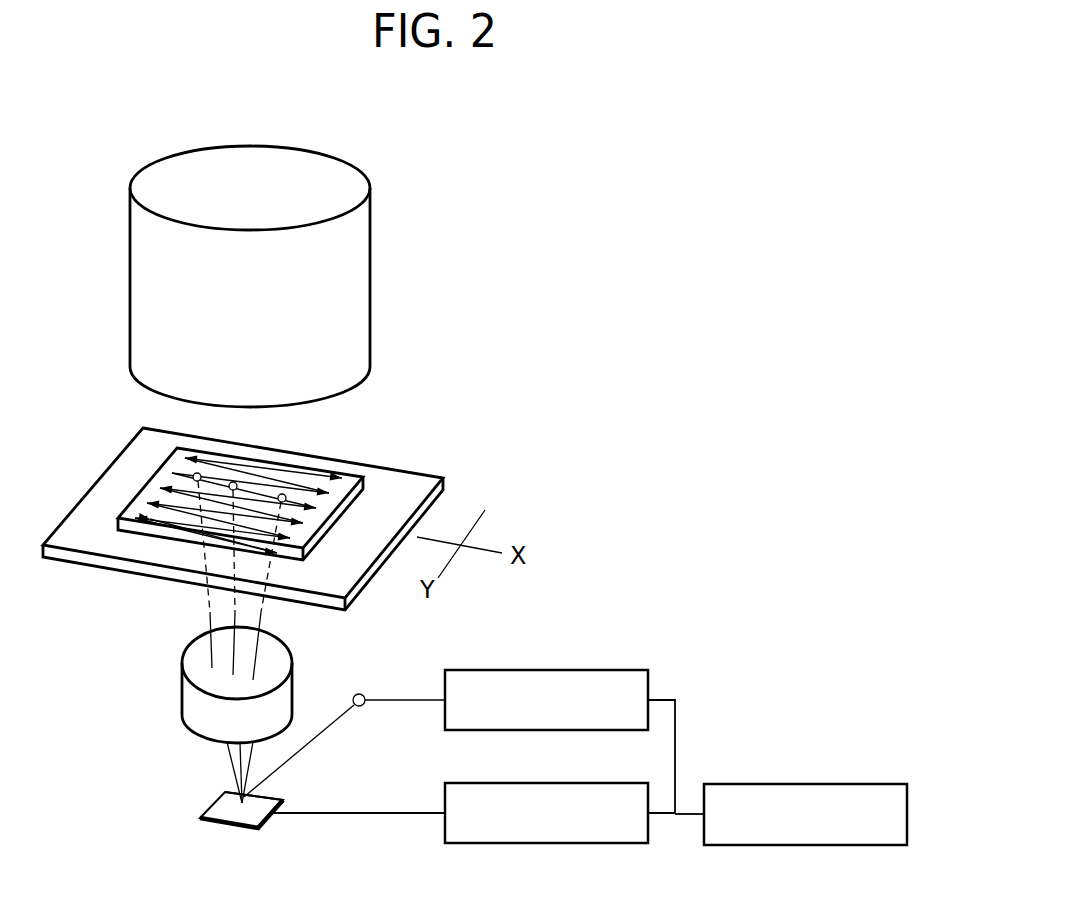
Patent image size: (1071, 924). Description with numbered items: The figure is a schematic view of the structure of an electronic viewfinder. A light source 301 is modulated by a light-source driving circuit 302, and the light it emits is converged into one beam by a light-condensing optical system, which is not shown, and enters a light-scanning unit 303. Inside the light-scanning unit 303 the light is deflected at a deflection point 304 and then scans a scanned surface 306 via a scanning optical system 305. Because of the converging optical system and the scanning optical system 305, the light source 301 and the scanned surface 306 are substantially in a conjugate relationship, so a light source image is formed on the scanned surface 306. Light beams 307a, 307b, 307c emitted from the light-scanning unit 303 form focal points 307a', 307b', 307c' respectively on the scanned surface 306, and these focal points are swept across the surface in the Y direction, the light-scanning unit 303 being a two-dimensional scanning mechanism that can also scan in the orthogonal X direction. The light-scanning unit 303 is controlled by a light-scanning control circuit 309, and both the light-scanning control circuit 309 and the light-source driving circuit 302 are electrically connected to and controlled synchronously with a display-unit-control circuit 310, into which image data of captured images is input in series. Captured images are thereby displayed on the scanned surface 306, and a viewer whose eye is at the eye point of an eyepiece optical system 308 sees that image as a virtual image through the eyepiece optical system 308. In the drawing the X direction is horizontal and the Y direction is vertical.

The light source 301 is at (359, 693).
The light-source driving circuit 302 is at (563, 670).
The light-scanning unit 303 is at (268, 830).
The deflection point 304 is at (240, 830).
The scanning optical system 305 is at (182, 700).
The scanned surface 306 is at (90, 488).
The light beam 307a is at (149, 769).
The light beam 307b is at (149, 773).
The light beam 307c is at (155, 787).
The focal point 307a' is at (324, 487).
The focal point 307b' is at (369, 500).
The focal point 307c' is at (413, 515).
The eyepiece optical system 308 is at (130, 278).
The light-scanning control circuit 309 is at (570, 843).
The display-unit-control circuit 310 is at (807, 785).